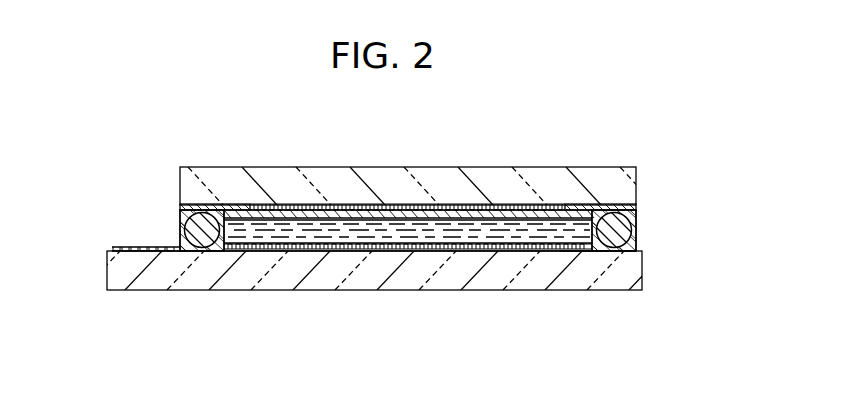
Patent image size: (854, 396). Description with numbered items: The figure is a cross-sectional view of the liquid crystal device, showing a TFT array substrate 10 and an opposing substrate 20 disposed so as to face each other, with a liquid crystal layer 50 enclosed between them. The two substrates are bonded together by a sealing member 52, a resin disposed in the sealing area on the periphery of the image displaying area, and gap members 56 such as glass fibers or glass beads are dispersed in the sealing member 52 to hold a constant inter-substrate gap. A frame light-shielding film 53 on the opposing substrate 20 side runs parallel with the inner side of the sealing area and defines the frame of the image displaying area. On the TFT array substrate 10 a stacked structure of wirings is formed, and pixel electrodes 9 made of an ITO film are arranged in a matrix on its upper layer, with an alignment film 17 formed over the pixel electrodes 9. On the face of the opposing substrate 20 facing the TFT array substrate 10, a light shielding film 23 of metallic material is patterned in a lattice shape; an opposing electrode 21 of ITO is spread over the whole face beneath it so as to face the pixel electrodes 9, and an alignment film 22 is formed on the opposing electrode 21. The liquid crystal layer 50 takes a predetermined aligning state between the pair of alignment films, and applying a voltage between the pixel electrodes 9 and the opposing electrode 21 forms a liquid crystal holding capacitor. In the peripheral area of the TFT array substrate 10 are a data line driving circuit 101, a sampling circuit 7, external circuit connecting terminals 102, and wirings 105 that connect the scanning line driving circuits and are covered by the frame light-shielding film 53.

The opposing substrate 20 is at (309, 183).
The TFT array substrate 10 is at (418, 273).
The frame light-shielding film 53 is at (247, 204).
The sealing member 52 is at (181, 236).
The gap member 56 is at (206, 251).
The light shielding film 23 is at (403, 204).
The opposing electrode 21 is at (523, 212).
The alignment film 22 is at (457, 224).
The liquid crystal layer 50 is at (357, 237).
The alignment film 17 is at (507, 241).
The pixel electrode 9 is at (302, 252).
The sampling circuit 7 is at (247, 251).
The wirings 105 is at (580, 253).
The data line driving circuit 101 is at (158, 245).
The external circuit connecting terminals 102 is at (125, 247).